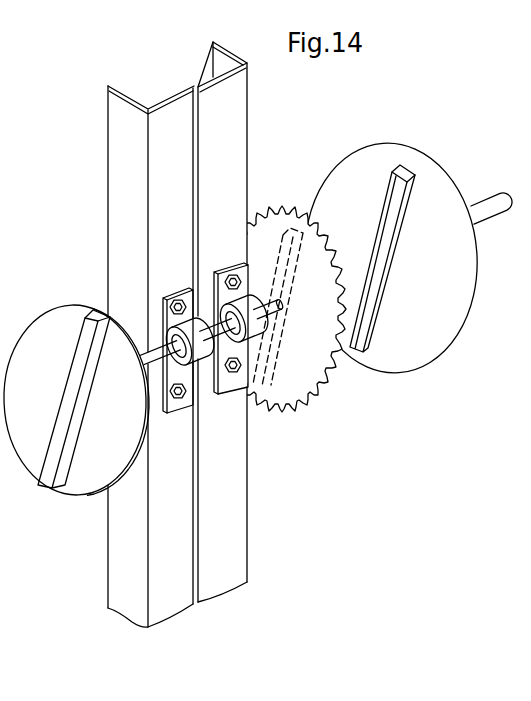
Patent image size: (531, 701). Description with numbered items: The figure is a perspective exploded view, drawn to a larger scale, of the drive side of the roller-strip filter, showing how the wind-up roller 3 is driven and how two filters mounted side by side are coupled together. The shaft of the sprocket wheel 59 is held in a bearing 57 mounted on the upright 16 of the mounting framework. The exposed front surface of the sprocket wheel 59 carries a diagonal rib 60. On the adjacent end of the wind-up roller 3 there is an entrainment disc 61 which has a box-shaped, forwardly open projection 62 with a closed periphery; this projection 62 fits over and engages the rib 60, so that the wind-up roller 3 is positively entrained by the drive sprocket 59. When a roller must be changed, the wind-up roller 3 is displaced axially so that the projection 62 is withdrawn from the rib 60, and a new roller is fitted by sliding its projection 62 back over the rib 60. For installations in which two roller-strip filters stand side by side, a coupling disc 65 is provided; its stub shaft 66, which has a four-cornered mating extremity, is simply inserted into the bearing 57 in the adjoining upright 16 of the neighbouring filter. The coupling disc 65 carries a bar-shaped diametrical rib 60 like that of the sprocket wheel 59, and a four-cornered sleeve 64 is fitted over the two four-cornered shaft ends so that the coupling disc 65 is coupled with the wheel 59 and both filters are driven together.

The wind-up roller 3 is at (493, 205).
The upright 16 is at (165, 122).
The bearing 57 is at (217, 326).
The sprocket wheel 59 is at (307, 388).
The diagonal rib 60 is at (87, 328).
The entrainment disc 61 is at (458, 295).
The box-shaped projection 62 is at (407, 170).
The four-cornered sleeve 64 is at (209, 380).
The coupling disc 65 is at (82, 482).
The stub shaft 66 is at (152, 370).